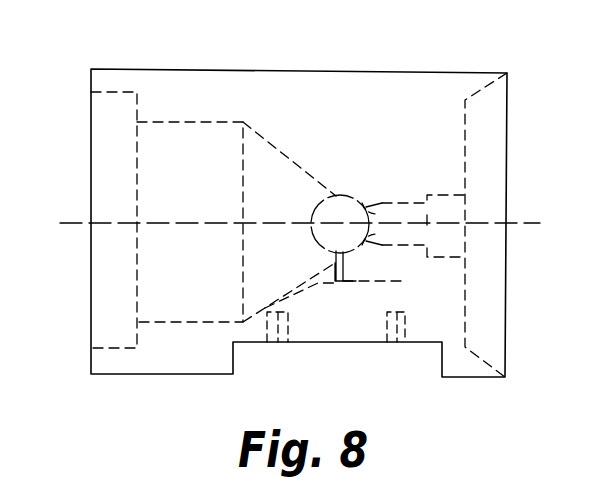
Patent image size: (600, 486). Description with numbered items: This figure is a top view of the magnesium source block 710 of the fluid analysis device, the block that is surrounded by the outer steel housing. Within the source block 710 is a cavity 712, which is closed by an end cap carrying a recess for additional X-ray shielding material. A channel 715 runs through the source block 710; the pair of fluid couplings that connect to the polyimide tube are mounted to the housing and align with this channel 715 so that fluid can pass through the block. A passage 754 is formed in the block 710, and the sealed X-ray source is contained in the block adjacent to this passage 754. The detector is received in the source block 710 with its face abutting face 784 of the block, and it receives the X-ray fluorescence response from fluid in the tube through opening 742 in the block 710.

The source block 710 is at (117, 374).
The cavity 712 is at (172, 320).
The channel 715 is at (316, 200).
The passage 754 is at (396, 203).
The opening 742 is at (343, 265).
The face 784 is at (372, 282).